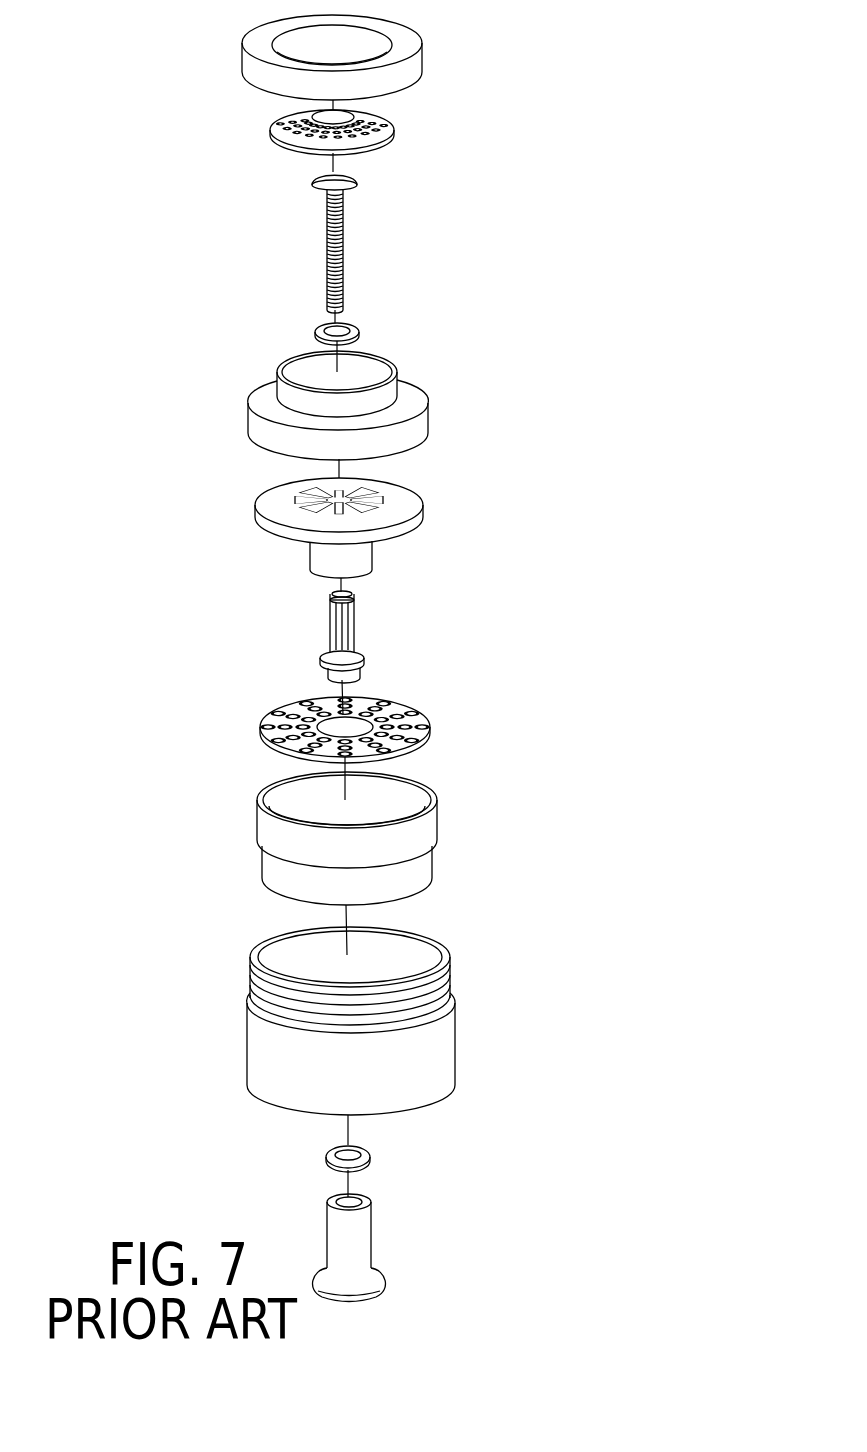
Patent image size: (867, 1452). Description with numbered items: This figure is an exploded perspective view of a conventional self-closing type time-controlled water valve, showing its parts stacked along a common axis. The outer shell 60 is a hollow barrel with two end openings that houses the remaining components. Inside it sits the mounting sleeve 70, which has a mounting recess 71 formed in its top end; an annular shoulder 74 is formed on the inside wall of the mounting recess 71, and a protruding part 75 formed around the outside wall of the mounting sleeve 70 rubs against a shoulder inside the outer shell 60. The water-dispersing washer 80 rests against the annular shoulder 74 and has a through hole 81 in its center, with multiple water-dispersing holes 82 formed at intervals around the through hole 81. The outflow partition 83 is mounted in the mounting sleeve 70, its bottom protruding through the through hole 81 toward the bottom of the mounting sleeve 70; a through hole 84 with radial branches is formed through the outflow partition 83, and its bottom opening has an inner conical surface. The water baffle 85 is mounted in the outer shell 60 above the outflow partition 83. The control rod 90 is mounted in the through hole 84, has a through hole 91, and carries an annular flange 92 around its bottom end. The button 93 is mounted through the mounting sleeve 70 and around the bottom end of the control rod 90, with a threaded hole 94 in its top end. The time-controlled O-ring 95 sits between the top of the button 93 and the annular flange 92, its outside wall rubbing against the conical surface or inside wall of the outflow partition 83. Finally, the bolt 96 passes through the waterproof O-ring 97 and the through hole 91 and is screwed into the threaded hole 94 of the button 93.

The outer shell 60 is at (436, 1050).
The mounting sleeve 70 is at (353, 838).
The mounting recess 71 is at (424, 783).
The annular shoulder 74 is at (286, 812).
The protruding part 75 is at (262, 838).
The water-dispersing washer 80 is at (375, 721).
The through hole 81 is at (362, 722).
The water-dispersing holes 82 is at (414, 734).
The outflow partition 83 is at (378, 518).
The through hole 84 is at (345, 497).
The water baffle 85 is at (400, 390).
The control rod 90 is at (335, 639).
The through hole 91 is at (335, 592).
The annular flange 92 is at (322, 666).
The button 93 is at (375, 1245).
The threaded hole 94 is at (362, 1196).
The time-controlled O-ring 95 is at (372, 1156).
The bolt 96 is at (340, 250).
The waterproof O-ring 97 is at (316, 334).